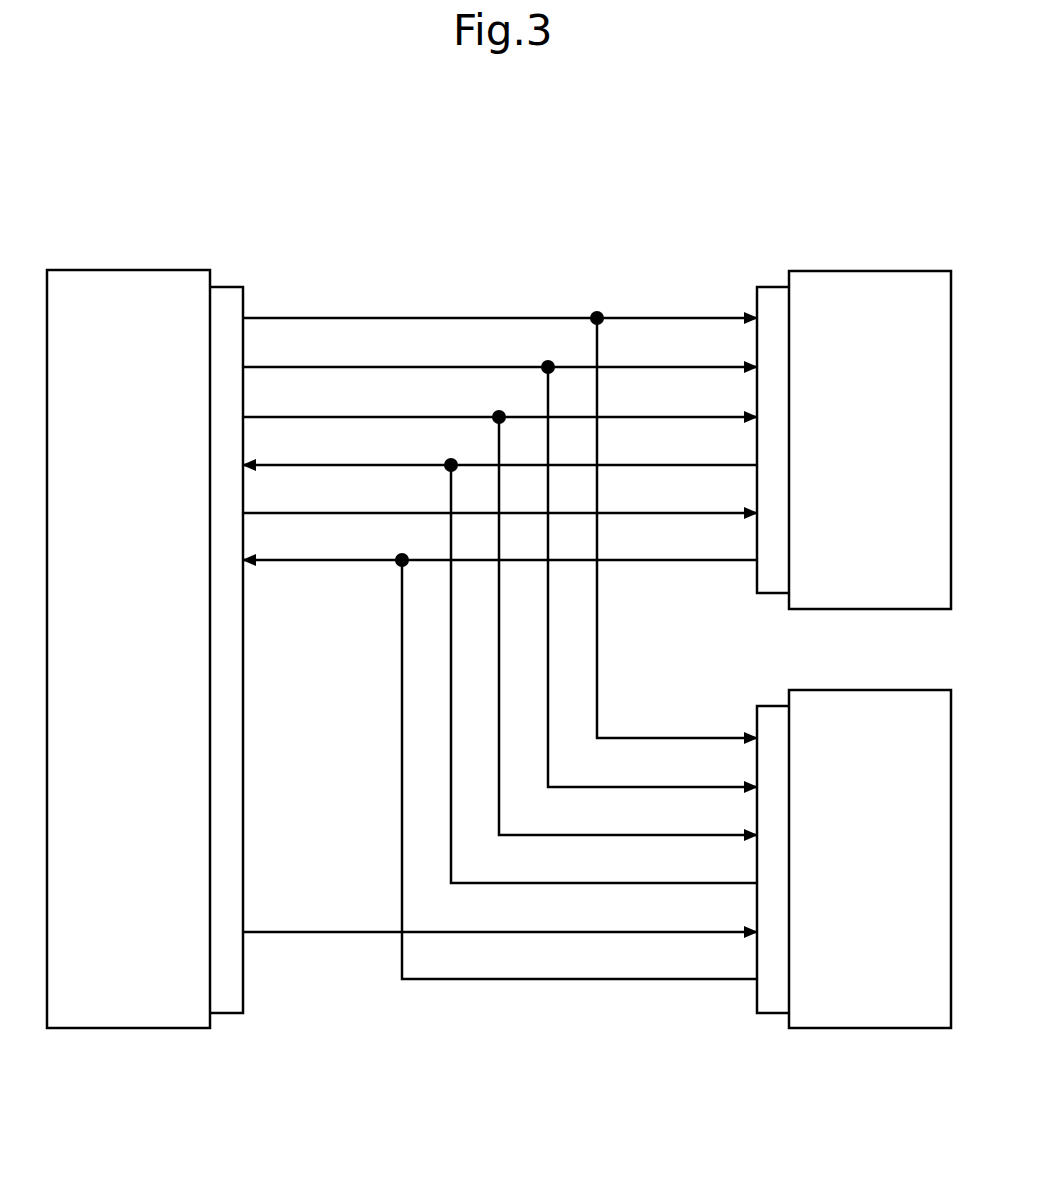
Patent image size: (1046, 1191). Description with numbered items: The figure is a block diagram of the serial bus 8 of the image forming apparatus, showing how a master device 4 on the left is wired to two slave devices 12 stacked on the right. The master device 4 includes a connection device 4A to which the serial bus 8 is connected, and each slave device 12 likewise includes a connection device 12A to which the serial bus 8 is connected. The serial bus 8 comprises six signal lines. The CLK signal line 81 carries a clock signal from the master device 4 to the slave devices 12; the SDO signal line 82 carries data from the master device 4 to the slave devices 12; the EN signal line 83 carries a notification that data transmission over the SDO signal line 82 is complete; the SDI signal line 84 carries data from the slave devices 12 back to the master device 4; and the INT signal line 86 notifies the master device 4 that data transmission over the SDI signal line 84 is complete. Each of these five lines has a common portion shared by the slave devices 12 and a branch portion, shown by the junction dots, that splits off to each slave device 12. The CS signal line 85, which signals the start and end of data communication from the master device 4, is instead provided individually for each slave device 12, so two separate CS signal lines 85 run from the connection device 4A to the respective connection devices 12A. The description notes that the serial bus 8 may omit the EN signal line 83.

The master device 4 is at (133, 270).
The connection device 4A is at (244, 993).
The serial bus 8 is at (320, 268).
The slave device 12 is at (875, 270).
The connection device 12A is at (757, 577).
The CLK signal line 81 is at (356, 317).
The SDO signal line 82 is at (356, 366).
The EN signal line 83 is at (356, 416).
The SDI signal line 84 is at (356, 464).
The CS signal line 85 is at (356, 512).
The INT signal line 86 is at (356, 559).